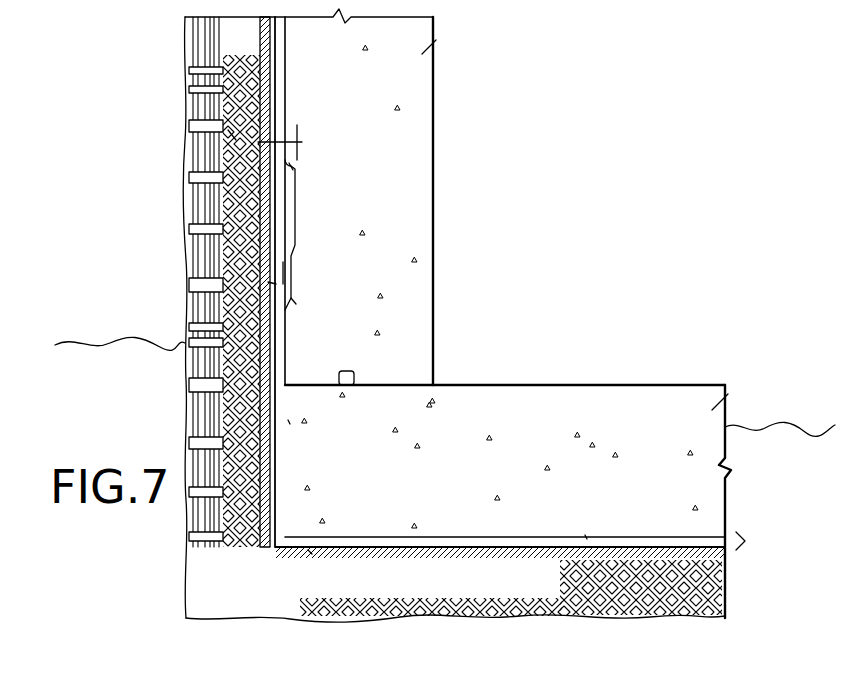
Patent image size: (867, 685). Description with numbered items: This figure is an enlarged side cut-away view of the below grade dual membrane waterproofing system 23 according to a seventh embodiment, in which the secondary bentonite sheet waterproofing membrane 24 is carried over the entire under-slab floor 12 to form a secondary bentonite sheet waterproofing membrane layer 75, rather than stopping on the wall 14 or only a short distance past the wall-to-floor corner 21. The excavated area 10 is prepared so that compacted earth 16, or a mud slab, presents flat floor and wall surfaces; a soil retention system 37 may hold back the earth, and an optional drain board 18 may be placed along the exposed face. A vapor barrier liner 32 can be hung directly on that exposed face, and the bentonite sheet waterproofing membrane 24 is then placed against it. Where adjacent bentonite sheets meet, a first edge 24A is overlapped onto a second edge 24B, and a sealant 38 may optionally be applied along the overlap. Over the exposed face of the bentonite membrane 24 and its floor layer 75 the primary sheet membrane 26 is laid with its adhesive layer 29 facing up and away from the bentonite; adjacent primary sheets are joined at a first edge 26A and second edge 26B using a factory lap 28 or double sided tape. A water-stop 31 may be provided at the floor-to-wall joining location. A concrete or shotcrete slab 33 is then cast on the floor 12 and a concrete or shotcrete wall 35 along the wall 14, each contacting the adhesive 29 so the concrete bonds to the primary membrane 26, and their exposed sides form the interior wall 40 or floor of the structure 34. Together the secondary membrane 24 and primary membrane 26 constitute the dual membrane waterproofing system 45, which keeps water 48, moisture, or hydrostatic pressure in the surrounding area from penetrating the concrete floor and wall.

The area 10 is at (250, 611).
The floor 12 is at (652, 350).
The wall 14 is at (536, 182).
The compacted earth 16 is at (193, 152).
The drain board 18 is at (268, 44).
The wall-to-floor corner 21 is at (343, 492).
The below grade dual membrane waterproofing system 23 is at (684, 128).
The secondary bentonite sheet waterproofing membrane 24 is at (277, 111).
The first edge of the bentonite sheet waterproofing membrane 24A is at (273, 283).
The second edge of the bentonite sheet waterproofing membrane 24B is at (296, 302).
The primary waterproofing membrane 26 is at (287, 70).
The first edge of the sheet membrane 26A is at (232, 134).
The second edge of the sheet membrane 26B is at (292, 165).
The factory lap 28 is at (300, 143).
The adhesive layer 29 is at (289, 422).
The water-stop 31 is at (357, 372).
The vapor barrier liner 32 is at (262, 56).
The concrete or shotcrete slab 33 is at (728, 400).
The structure 34 is at (433, 46).
The concrete or shotcrete wall 35 is at (425, 93).
The soil retention system 37 is at (220, 238).
The sealant 38 is at (272, 288).
The interior wall 40 is at (436, 147).
The dual membrane waterproofing system 45 is at (742, 540).
The water 48 is at (150, 347).
The secondary bentonite sheet waterproofing membrane layer 75 is at (308, 552).